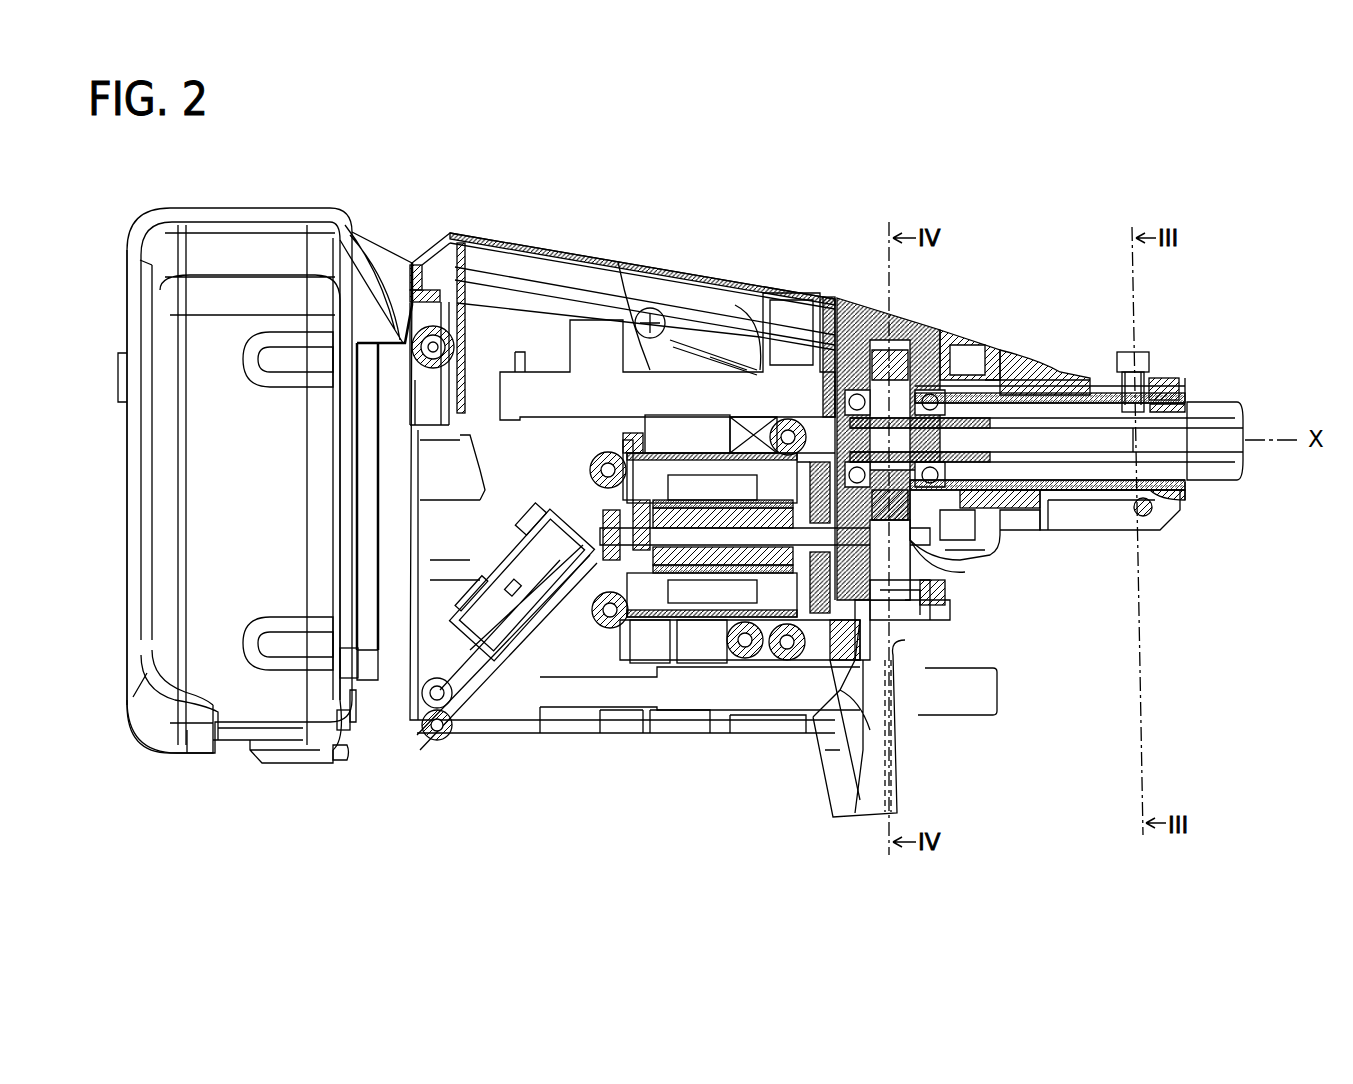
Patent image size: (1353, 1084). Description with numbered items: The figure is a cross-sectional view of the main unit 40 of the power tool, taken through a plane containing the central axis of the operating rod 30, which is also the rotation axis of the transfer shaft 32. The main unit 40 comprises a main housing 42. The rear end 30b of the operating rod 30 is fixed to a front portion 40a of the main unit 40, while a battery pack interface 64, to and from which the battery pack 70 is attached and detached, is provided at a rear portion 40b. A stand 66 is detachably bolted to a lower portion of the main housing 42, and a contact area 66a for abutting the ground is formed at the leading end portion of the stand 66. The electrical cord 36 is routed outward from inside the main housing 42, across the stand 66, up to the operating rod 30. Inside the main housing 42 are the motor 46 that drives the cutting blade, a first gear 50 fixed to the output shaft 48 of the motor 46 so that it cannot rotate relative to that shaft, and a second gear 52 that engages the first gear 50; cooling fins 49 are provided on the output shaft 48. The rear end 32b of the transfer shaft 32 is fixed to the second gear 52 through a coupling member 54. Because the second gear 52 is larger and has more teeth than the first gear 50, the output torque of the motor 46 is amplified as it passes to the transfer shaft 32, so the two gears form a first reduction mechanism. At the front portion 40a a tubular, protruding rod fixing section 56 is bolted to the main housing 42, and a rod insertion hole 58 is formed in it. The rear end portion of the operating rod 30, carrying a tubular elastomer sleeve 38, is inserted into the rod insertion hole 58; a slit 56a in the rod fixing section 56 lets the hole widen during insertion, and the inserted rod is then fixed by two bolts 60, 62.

The operating rod 30 is at (1247, 455).
The rear end of the operating rod 30b is at (985, 542).
The transfer shaft 32 is at (1205, 490).
The rear end of the transfer shaft 32b is at (862, 300).
The electrical cord 36 is at (972, 715).
The sleeve 38 is at (1180, 492).
The main unit 40 is at (537, 300).
The front portion of the main unit 40a is at (1190, 365).
The rear portion of the main unit 40b is at (392, 340).
The main housing 42 is at (690, 290).
The motor 46 is at (692, 620).
The output shaft 48 is at (725, 605).
The cooling fins 49 is at (808, 650).
The first gear 50 is at (935, 580).
The second gear 52 is at (935, 335).
The coupling member 54 is at (990, 365).
The rod fixing section 56 is at (1026, 365).
The slit 56a is at (1058, 525).
The rod insertion hole 58 is at (1058, 380).
The bolt 60 is at (1152, 352).
The bolt 62 is at (1135, 516).
The battery pack interface 64 is at (323, 767).
The stand 66 is at (833, 800).
The contact area 66a is at (860, 805).
The battery pack 70 is at (238, 222).